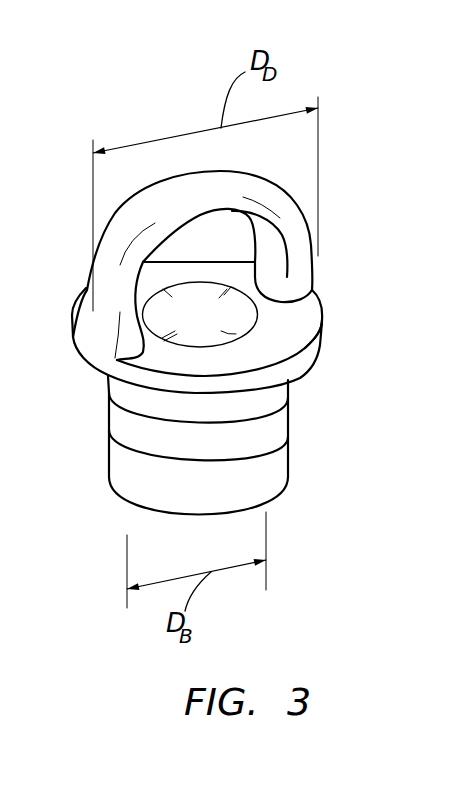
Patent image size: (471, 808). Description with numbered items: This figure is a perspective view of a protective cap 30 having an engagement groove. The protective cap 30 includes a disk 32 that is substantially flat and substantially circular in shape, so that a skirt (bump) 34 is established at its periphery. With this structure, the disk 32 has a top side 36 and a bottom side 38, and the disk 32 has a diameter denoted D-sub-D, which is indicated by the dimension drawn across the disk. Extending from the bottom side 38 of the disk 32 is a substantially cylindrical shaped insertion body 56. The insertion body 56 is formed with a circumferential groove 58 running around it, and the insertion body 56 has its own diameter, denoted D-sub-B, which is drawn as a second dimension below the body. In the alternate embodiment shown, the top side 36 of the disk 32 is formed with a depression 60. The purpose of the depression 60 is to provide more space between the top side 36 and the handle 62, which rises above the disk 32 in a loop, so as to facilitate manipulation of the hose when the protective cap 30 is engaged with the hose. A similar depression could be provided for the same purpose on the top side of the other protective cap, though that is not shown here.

The protective cap 30 is at (198, 329).
The disk 32 is at (296, 343).
The skirt (bump) 34 is at (307, 348).
The top side 36 is at (310, 303).
The bottom side 38 is at (288, 392).
The insertion body 56 is at (267, 463).
The circumferential groove 58 is at (123, 425).
The depression 60 is at (214, 327).
The handle 62 is at (232, 193).